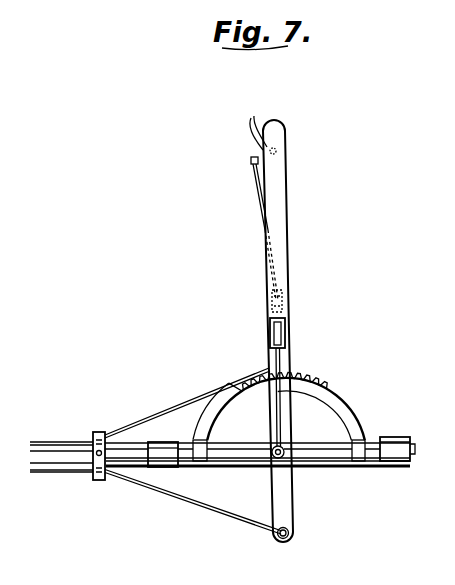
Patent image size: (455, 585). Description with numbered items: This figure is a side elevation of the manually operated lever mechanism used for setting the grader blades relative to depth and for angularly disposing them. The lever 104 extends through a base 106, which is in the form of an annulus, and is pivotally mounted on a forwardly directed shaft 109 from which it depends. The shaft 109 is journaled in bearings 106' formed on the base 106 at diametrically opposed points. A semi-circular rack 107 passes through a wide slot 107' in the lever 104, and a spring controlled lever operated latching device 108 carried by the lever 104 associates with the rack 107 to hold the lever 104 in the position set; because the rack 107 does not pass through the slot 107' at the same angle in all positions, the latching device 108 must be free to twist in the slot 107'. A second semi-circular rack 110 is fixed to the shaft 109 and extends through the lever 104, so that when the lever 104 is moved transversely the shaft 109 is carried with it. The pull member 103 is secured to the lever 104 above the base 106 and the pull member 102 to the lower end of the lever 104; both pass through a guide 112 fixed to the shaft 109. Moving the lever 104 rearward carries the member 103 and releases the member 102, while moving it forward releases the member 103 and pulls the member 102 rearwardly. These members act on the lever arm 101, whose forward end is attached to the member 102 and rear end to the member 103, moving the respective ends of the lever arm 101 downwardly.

The lever arm 101 is at (46, 397).
The pull member 102 is at (190, 503).
The pull member 103 is at (172, 408).
The lever arm 104 is at (282, 226).
The base 106 is at (257, 488).
The bearings 106' is at (395, 431).
The semi-circular rack 107 is at (233, 385).
The wide slot 107' is at (315, 325).
The pawl 108 is at (257, 181).
The shaft 109 is at (327, 446).
The semi-circular rack 110 is at (338, 377).
The guide 112 is at (100, 432).